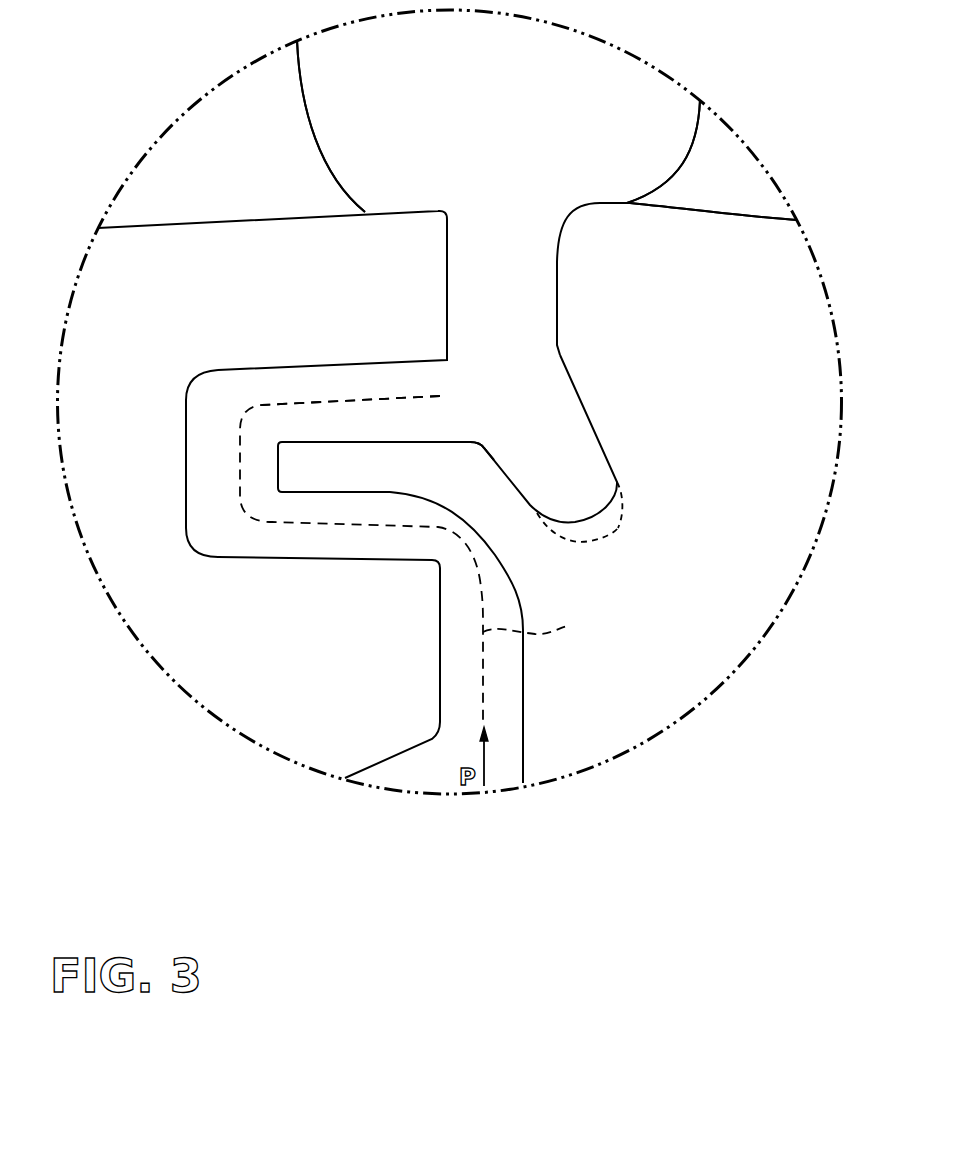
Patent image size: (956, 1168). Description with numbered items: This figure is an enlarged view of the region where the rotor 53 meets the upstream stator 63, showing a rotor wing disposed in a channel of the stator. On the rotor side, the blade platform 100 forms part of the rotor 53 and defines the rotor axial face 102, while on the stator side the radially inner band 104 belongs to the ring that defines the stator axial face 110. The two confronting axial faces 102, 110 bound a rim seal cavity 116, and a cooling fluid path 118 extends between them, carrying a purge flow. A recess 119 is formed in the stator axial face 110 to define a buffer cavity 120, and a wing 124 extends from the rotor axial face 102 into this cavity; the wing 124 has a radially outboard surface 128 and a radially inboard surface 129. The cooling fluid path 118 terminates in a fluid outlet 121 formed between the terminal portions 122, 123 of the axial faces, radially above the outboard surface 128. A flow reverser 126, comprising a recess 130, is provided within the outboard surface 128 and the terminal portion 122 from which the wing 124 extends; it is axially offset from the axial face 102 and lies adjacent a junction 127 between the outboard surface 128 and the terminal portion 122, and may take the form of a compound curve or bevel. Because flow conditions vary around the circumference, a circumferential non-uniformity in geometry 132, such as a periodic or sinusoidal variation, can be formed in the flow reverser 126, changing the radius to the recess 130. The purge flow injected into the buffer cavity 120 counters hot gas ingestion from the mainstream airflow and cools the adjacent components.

The rotor 53 is at (716, 180).
The stator 63 is at (208, 188).
The blade platform 100 is at (765, 417).
The rotor axial face 102 is at (523, 685).
The radially inner band 104 is at (129, 417).
The stator axial face 110 is at (438, 622).
The rim seal cavity 116 is at (508, 186).
The cooling fluid path 118 is at (546, 616).
The recess 119 is at (210, 557).
The buffer cavity 120 is at (232, 443).
The fluid outlet 121 is at (454, 398).
The terminal portion 122 is at (565, 360).
The terminal portion 123 is at (447, 360).
The wing 124 is at (354, 480).
The flow reverser 126 is at (591, 490).
The junction 127 is at (483, 441).
The radially outboard surface 128 is at (390, 446).
The radially inboard surface 129 is at (303, 494).
The recess 130 is at (603, 515).
The circumferential non-uniformity in geometry 132 is at (597, 538).